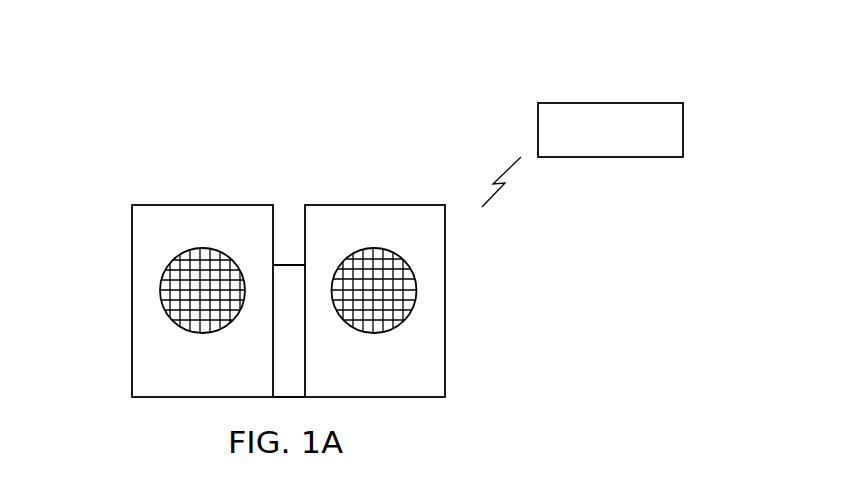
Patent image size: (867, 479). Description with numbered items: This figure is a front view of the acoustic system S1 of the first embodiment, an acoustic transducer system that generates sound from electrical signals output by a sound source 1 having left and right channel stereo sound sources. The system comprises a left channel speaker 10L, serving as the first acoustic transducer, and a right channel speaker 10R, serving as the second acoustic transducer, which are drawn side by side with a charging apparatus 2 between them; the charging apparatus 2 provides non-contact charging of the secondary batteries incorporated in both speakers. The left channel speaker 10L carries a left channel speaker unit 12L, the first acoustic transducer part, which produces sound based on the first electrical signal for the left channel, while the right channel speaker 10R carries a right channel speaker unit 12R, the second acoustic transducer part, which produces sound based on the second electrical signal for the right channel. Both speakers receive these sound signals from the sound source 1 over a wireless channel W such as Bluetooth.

The acoustic system S1 is at (291, 99).
The sound source 1 is at (600, 103).
The left channel speaker 10L is at (213, 205).
The right channel speaker 10R is at (385, 205).
The charging apparatus 2 is at (289, 265).
The left channel speaker unit 12L is at (158, 292).
The right channel speaker unit 12R is at (417, 293).
The wireless channel W is at (503, 187).